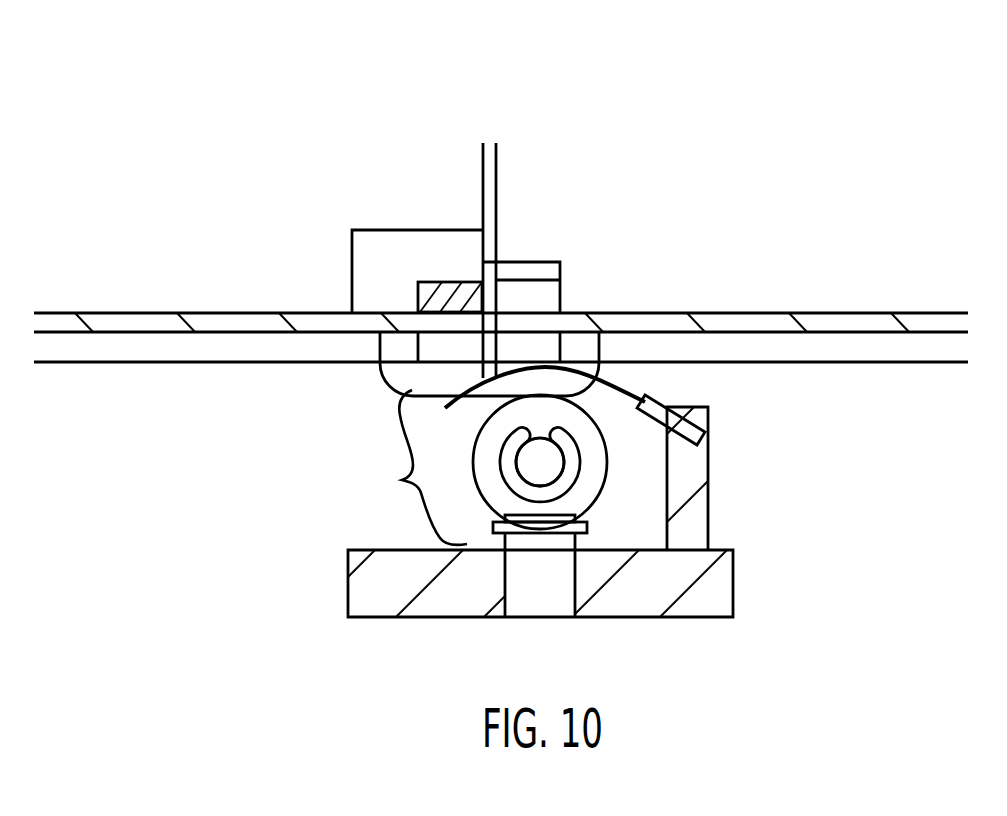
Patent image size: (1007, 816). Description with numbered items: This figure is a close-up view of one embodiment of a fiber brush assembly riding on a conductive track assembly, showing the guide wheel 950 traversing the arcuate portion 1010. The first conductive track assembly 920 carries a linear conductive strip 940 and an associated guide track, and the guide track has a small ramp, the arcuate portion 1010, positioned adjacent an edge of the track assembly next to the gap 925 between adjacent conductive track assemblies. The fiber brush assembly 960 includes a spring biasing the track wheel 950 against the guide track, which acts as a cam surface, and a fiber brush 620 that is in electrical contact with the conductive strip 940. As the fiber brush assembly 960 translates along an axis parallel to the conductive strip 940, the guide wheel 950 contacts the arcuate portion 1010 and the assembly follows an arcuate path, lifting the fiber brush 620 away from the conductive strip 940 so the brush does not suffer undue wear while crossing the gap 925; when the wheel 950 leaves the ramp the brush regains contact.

The first conductive track assembly 920 is at (337, 207).
The gap 925 is at (492, 128).
The conductive strip 940 is at (838, 299).
The fiber brush 620 is at (612, 368).
The arcuate portion 1010 is at (380, 383).
The guide wheel 950 is at (607, 509).
The first fiber brush assembly 960 is at (388, 482).